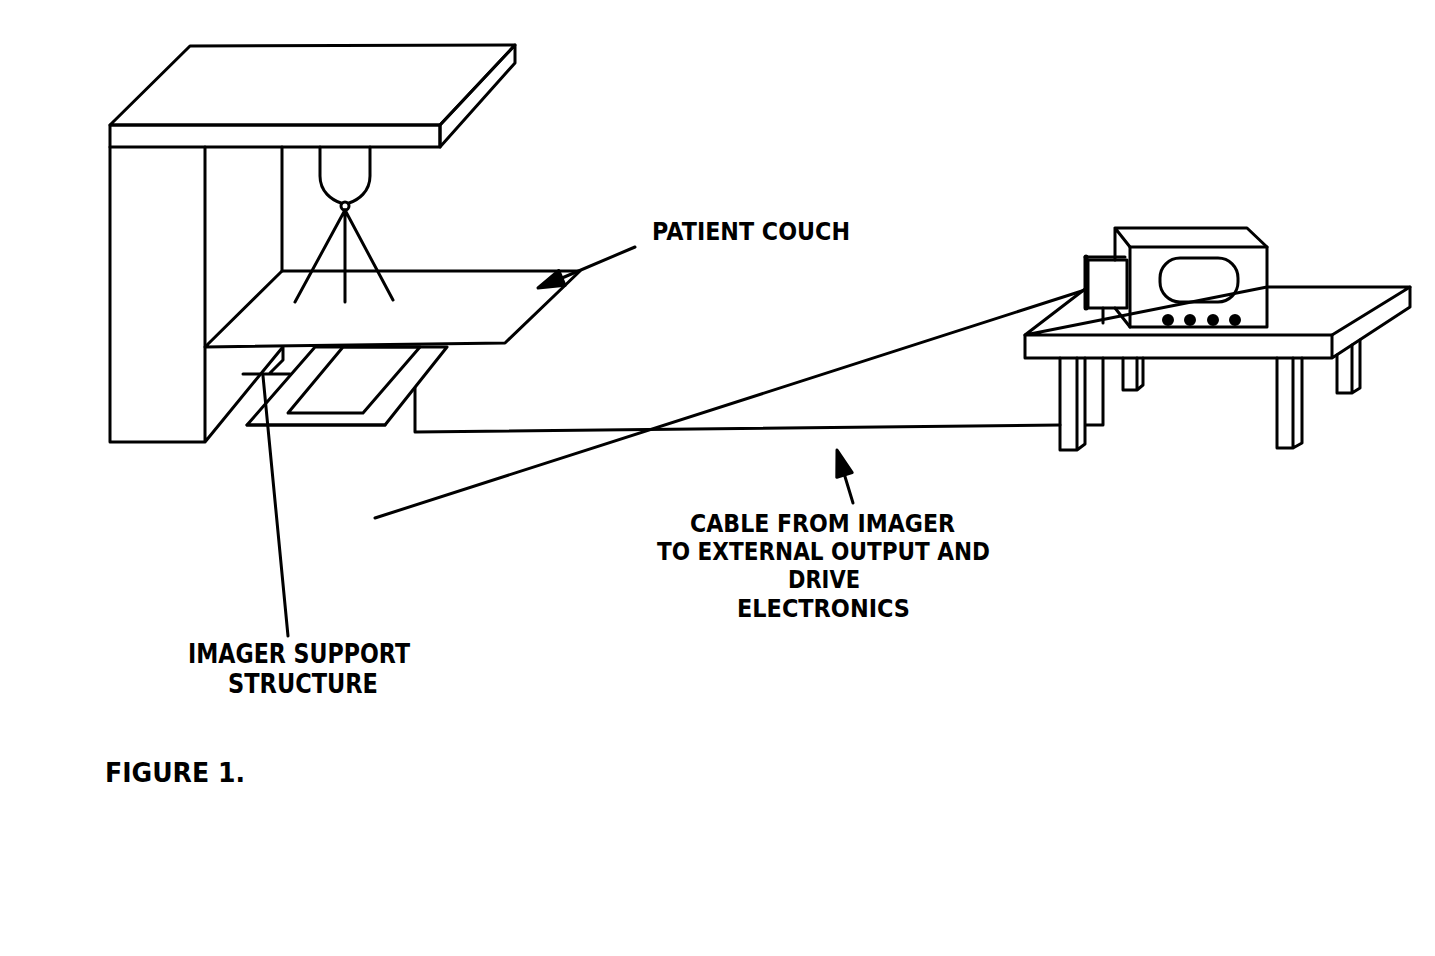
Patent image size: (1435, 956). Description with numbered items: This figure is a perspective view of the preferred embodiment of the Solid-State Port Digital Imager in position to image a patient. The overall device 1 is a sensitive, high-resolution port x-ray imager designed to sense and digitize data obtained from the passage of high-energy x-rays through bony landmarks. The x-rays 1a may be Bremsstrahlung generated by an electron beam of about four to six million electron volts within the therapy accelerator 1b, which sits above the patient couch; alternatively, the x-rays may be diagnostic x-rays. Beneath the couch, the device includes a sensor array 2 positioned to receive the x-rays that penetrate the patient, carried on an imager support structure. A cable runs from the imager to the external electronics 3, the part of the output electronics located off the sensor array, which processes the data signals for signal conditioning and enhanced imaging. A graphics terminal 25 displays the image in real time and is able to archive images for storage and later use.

The overall device 1 is at (320, 422).
The x-rays 1a is at (411, 249).
The therapy accelerator 1b is at (412, 164).
The sensor array 2 is at (377, 430).
The external electronics 3 is at (398, 388).
The graphics terminal 25 is at (1213, 288).